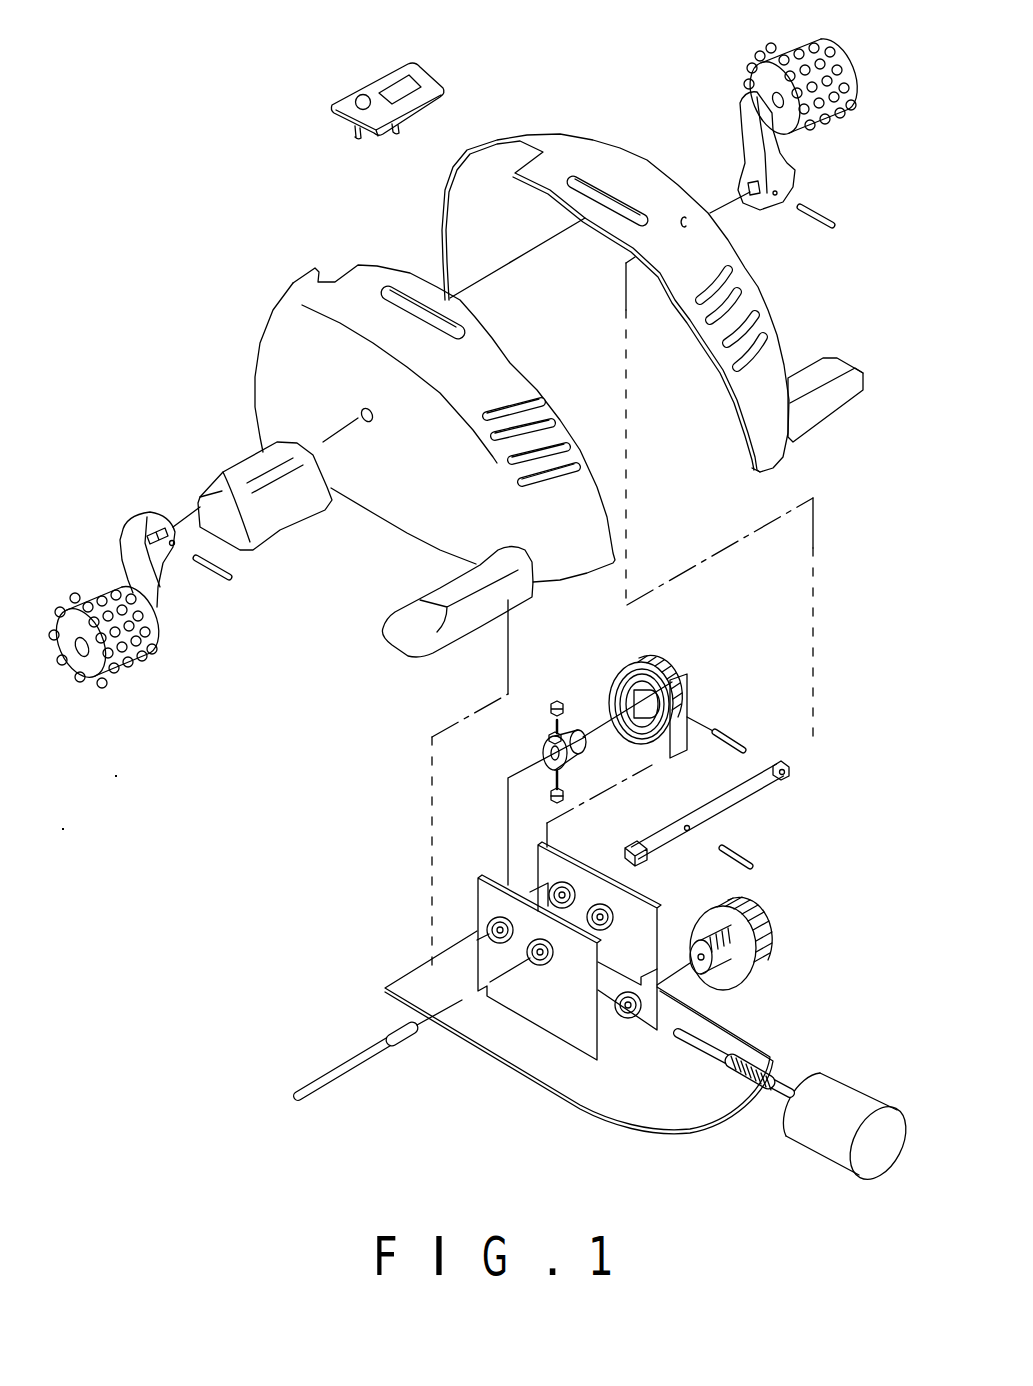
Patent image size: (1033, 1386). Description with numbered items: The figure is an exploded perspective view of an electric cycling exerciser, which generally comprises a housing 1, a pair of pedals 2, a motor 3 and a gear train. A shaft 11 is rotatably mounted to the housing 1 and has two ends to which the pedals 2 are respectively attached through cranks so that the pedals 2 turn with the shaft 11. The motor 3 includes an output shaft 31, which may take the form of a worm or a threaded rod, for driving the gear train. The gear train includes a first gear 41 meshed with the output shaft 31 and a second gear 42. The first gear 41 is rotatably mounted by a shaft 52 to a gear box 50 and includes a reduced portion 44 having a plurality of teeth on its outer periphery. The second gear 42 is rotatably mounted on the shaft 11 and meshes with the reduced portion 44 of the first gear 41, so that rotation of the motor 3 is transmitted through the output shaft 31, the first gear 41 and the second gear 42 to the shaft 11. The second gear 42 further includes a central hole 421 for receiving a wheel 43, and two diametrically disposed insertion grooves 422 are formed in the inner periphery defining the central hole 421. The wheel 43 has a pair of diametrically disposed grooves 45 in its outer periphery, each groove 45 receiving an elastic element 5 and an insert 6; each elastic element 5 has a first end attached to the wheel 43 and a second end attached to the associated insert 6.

The housing 1 is at (408, 968).
The pedals 2 is at (163, 603).
The motor 3 is at (843, 1103).
The output shaft 31 is at (753, 1067).
The elastic element 5 is at (556, 723).
The insert 6 is at (555, 702).
The shaft 11 is at (743, 790).
The first gear 41 is at (768, 933).
The second gear 42 is at (652, 666).
The central hole 421 is at (650, 701).
The insertion grooves 422 is at (652, 742).
The wheel 43 is at (542, 752).
The reduced portion 44 is at (703, 943).
The grooves 45 is at (553, 765).
The gear box 50 is at (562, 1008).
The shaft 52 is at (363, 1060).